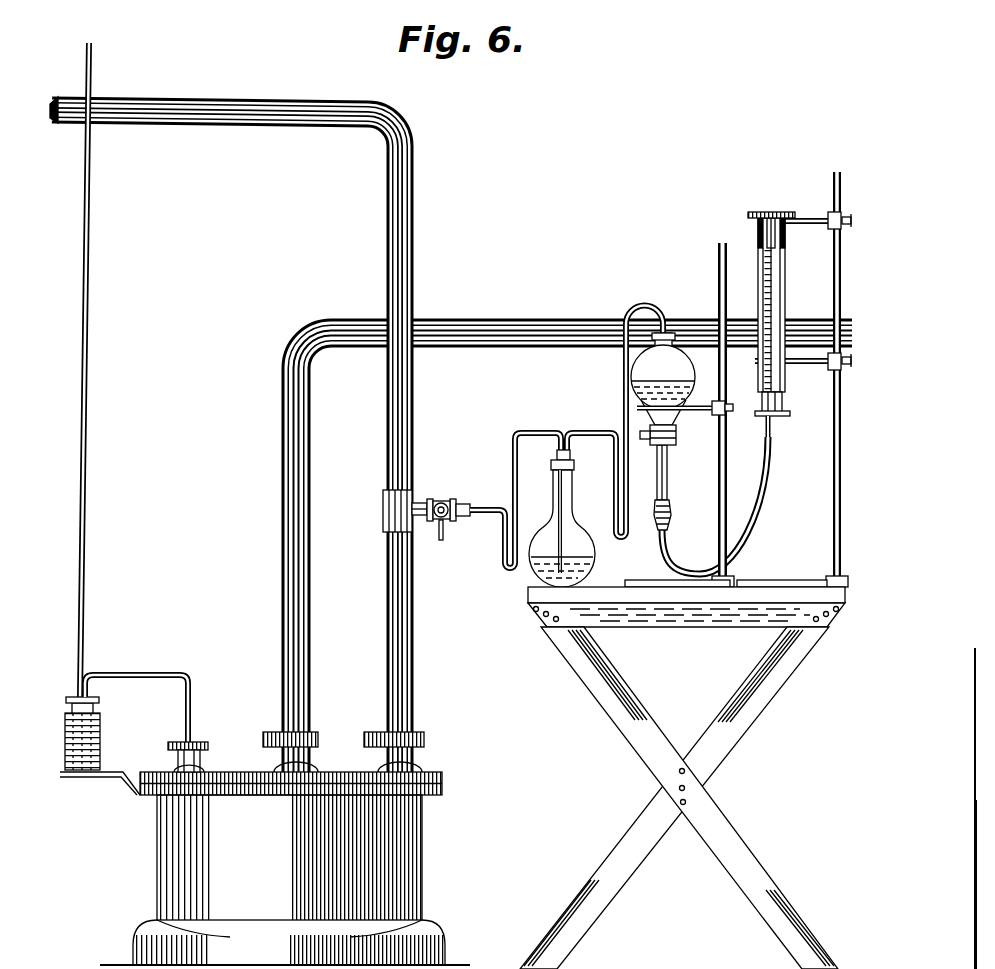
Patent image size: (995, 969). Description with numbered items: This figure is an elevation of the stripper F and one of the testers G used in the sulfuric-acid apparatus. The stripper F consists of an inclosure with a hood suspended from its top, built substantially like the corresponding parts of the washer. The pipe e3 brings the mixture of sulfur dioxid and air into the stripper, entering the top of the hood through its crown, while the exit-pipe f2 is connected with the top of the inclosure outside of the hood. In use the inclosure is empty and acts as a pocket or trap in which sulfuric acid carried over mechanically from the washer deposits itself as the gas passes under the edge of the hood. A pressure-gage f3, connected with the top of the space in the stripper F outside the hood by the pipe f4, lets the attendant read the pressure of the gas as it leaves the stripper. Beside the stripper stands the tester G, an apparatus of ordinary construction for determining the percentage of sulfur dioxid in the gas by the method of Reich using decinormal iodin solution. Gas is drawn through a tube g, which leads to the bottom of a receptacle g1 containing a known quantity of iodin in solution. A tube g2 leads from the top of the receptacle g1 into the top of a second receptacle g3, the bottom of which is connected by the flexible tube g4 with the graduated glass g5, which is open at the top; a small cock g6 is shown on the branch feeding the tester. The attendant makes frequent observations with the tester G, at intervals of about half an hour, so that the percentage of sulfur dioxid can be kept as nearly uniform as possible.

The pipe e3 is at (300, 601).
The exit-pipe f2 is at (412, 606).
The pressure-gage f3 is at (100, 734).
The pipe f4 is at (137, 672).
The tube g is at (540, 432).
The receptacle g1 is at (574, 525).
The tube g2 is at (652, 487).
The receptacle g3 is at (691, 368).
The flexible tube g4 is at (672, 557).
The graduated glass g5 is at (787, 307).
The valve g6 is at (445, 522).
The stripper F is at (285, 868).
The tester G is at (748, 570).